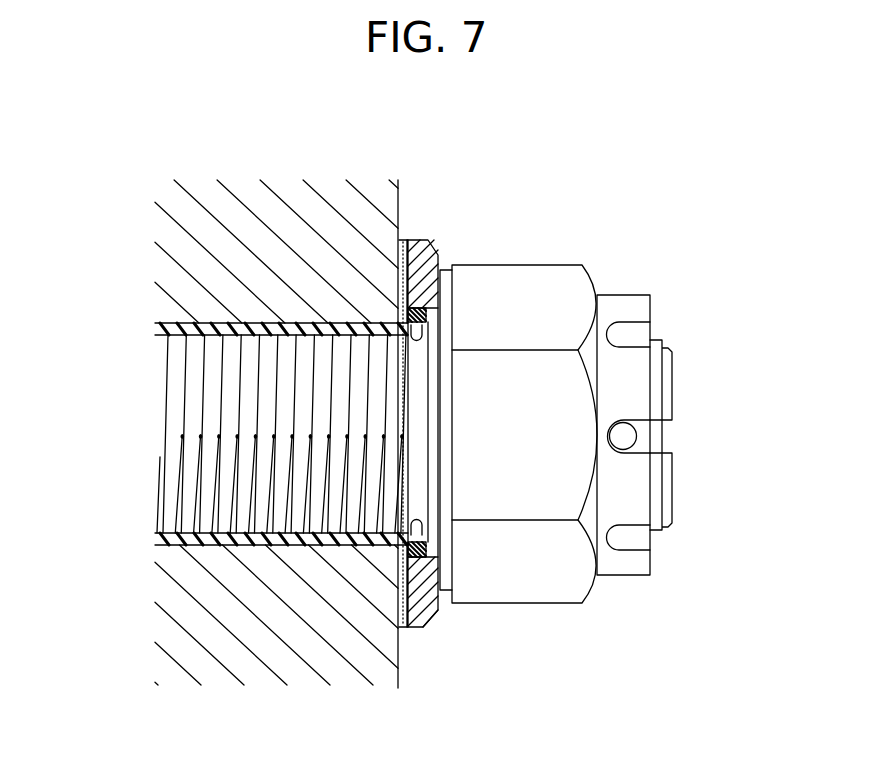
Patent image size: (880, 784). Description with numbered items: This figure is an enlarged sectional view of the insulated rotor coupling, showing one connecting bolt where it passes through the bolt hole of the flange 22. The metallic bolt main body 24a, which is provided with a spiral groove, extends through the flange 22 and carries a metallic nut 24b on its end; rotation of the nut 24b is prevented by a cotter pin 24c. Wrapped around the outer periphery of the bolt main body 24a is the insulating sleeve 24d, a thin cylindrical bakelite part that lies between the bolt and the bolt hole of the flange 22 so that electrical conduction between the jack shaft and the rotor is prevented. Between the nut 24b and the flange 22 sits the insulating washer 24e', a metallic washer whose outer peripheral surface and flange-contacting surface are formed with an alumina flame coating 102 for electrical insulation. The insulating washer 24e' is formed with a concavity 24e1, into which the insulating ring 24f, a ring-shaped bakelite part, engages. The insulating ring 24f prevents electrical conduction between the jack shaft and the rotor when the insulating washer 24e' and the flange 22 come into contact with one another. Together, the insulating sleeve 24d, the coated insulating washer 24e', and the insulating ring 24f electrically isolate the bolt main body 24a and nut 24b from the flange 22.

The flange 22 is at (310, 198).
The insulating sleeve 24d is at (267, 323).
The bolt main body 24a is at (197, 404).
The insulating washer 24e' is at (452, 405).
The concavity 24e1 is at (400, 316).
The insulating ring 24f is at (400, 543).
The alumina flame coating 102 is at (423, 625).
The nut 24b is at (530, 283).
The cotter pin 24c is at (625, 434).